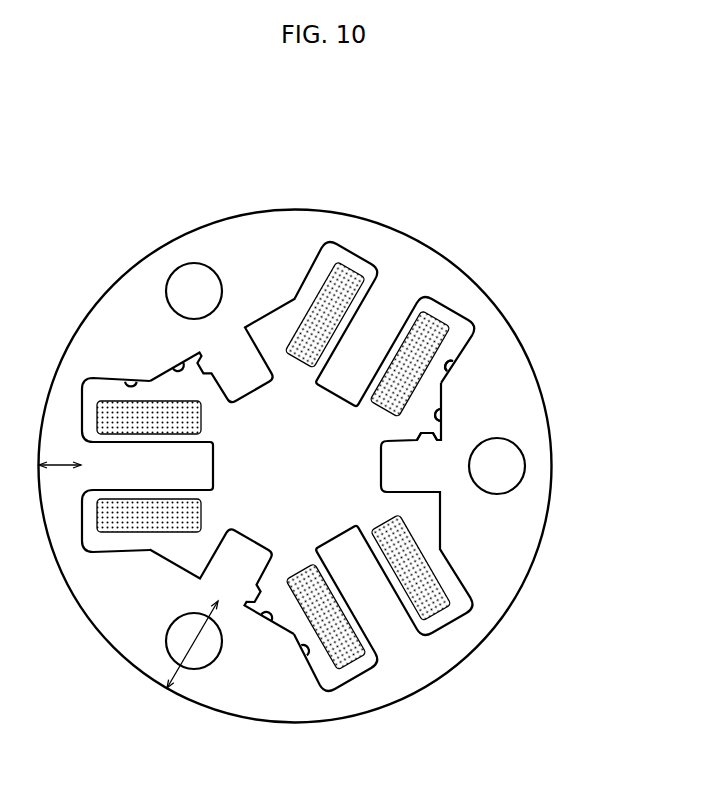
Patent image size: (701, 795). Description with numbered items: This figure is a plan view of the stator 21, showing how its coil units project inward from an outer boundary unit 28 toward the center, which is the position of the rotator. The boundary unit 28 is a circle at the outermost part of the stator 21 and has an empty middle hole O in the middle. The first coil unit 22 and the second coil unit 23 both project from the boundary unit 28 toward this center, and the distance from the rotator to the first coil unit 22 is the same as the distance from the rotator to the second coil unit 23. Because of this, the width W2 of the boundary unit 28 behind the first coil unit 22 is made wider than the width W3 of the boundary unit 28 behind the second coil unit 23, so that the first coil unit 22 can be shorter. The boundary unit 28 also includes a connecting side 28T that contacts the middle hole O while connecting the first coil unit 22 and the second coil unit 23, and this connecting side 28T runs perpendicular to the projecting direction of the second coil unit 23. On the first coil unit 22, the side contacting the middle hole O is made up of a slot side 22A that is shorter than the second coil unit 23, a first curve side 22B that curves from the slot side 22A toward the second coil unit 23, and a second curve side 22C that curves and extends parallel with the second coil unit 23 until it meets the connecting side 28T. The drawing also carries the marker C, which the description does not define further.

The stator 21 is at (300, 119).
The first coil unit 22 is at (225, 561).
The slot side 22A is at (438, 447).
The first curve side 22B is at (436, 418).
The second curve side 22C is at (441, 385).
The second coil unit 23 is at (360, 347).
The boundary unit 28 is at (423, 660).
The connecting side 28T is at (473, 338).
The middle hole O is at (278, 463).
The center line C is at (313, 631).
The width of the boundary unit at the first coil unit W2 is at (195, 650).
The width of the boundary unit at the second coil unit W3 is at (60, 482).